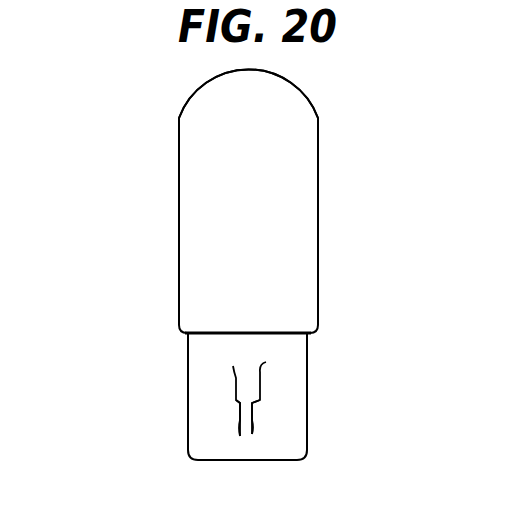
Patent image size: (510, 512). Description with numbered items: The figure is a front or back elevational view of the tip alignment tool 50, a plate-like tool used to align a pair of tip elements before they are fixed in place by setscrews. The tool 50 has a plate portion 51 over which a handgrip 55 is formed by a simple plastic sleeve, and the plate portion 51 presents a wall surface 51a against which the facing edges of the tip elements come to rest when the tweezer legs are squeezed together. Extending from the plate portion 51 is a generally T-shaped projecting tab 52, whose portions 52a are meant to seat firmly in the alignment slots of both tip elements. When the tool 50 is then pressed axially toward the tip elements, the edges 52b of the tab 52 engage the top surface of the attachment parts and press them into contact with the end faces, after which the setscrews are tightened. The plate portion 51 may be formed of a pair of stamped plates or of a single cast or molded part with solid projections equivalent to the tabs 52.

The tip alignment tool 50 is at (163, 219).
The handgrip 55 is at (298, 117).
The plate portion 51 is at (188, 365).
The wall surface 51a is at (230, 375).
The projecting tab 52 is at (244, 367).
The edge of tab 52b is at (240, 404).
The portion of projecting tab 52a is at (247, 417).